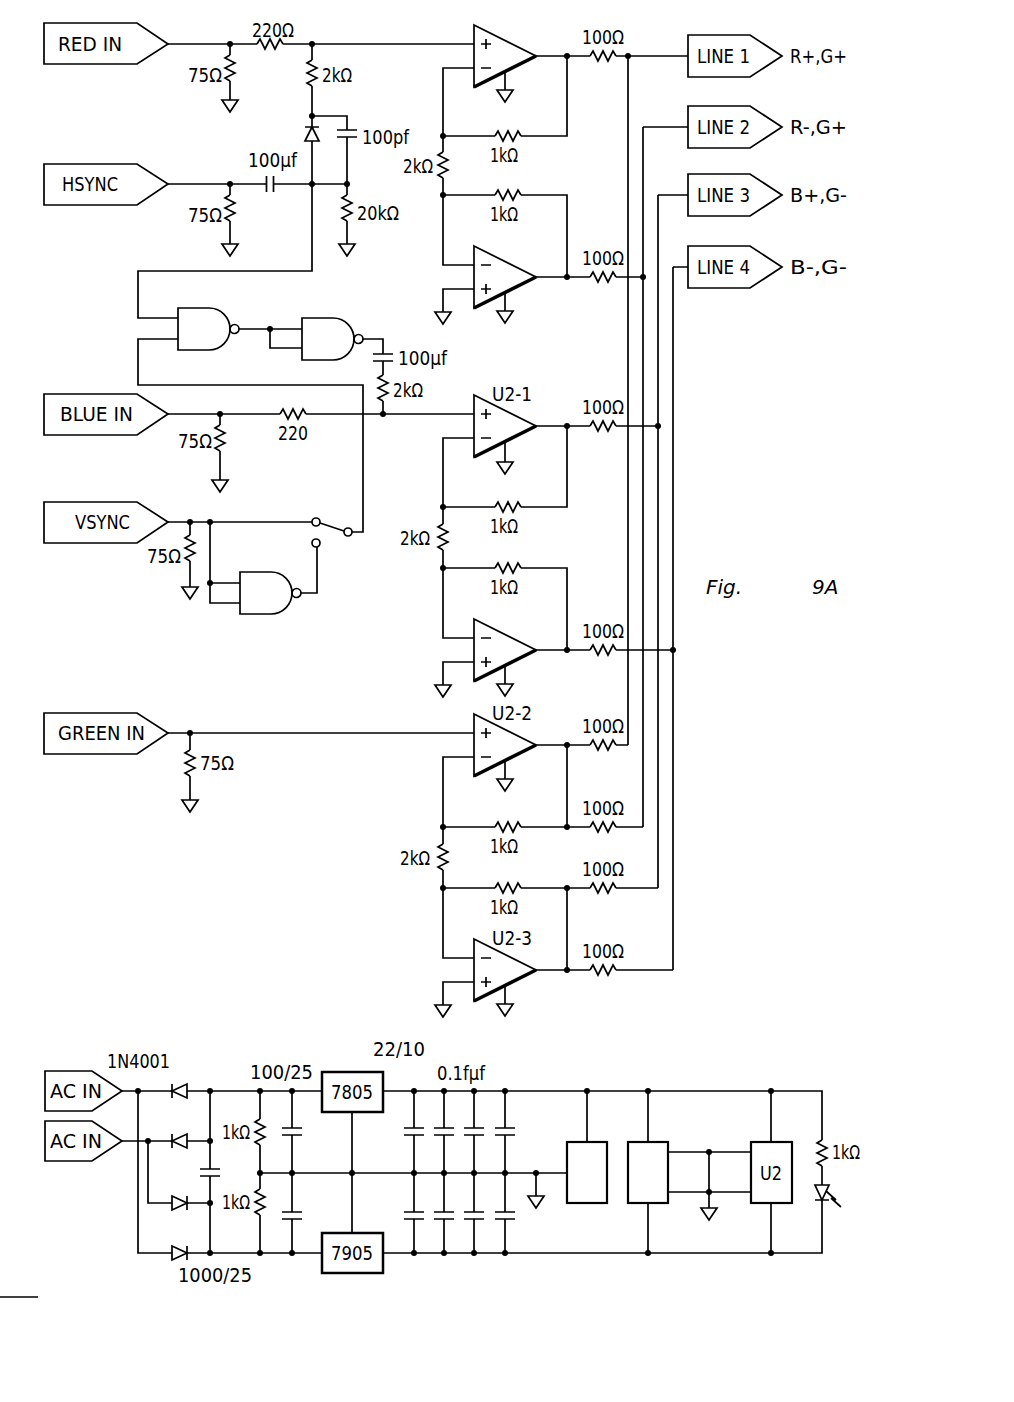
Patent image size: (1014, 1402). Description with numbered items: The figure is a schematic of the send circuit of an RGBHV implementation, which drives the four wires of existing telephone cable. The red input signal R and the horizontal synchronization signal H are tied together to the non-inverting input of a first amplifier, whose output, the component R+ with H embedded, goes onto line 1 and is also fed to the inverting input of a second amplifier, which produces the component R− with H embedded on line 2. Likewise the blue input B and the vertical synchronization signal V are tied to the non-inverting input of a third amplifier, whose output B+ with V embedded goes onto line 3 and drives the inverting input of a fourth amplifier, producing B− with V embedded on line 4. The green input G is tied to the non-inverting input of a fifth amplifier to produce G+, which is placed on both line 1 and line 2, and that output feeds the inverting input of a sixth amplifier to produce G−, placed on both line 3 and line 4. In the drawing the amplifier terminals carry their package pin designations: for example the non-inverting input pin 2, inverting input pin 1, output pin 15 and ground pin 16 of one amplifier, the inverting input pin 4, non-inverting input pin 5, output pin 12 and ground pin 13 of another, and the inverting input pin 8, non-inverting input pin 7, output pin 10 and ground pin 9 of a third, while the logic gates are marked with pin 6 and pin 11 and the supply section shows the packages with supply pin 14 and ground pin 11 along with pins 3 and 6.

The line 1 is at (507, 57).
The line 2 is at (507, 57).
The line 3 is at (663, 1172).
The line 4 is at (498, 278).
The pin 5 is at (498, 278).
The NAND gate output pin 6 is at (207, 323).
The pin 7 is at (498, 651).
The pin 8 is at (263, 586).
The pin 9 is at (263, 586).
The pin 10 is at (263, 586).
The pin 11 is at (331, 335).
The pin 12 is at (498, 278).
The pin 13 is at (498, 278).
The IC supply pin 14 is at (578, 1145).
The op-amp output pin 15 is at (507, 57).
The op-amp ground pin 16 is at (507, 57).